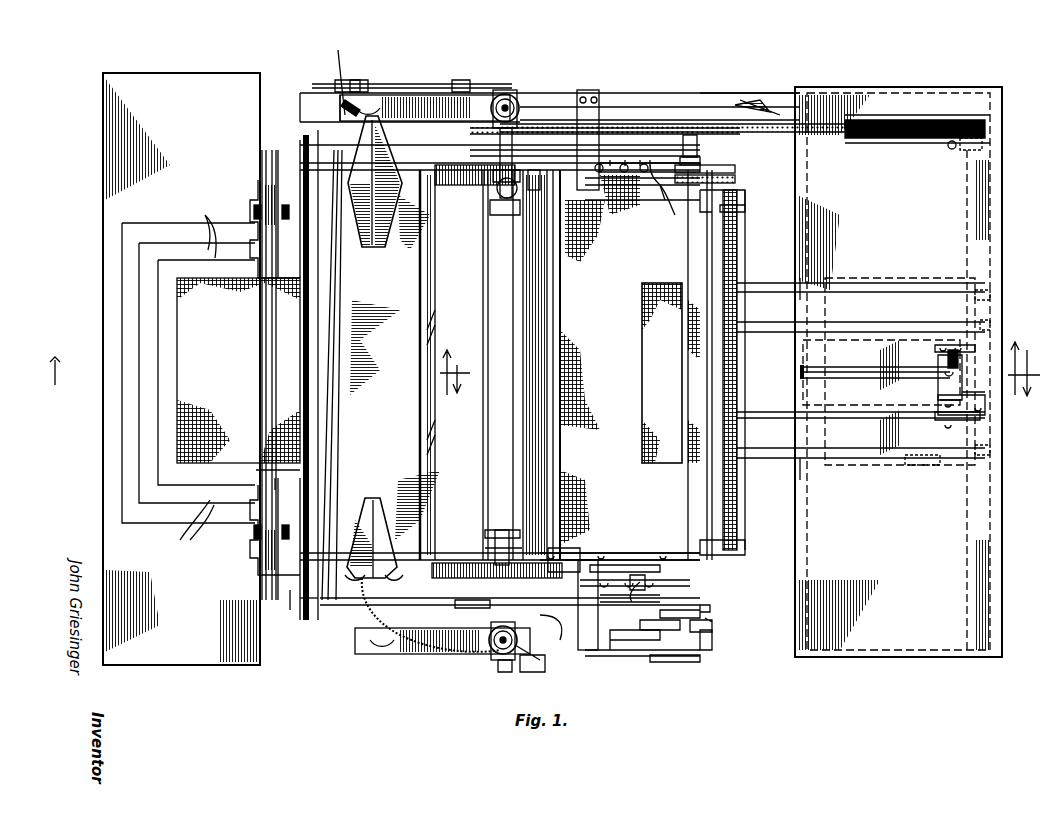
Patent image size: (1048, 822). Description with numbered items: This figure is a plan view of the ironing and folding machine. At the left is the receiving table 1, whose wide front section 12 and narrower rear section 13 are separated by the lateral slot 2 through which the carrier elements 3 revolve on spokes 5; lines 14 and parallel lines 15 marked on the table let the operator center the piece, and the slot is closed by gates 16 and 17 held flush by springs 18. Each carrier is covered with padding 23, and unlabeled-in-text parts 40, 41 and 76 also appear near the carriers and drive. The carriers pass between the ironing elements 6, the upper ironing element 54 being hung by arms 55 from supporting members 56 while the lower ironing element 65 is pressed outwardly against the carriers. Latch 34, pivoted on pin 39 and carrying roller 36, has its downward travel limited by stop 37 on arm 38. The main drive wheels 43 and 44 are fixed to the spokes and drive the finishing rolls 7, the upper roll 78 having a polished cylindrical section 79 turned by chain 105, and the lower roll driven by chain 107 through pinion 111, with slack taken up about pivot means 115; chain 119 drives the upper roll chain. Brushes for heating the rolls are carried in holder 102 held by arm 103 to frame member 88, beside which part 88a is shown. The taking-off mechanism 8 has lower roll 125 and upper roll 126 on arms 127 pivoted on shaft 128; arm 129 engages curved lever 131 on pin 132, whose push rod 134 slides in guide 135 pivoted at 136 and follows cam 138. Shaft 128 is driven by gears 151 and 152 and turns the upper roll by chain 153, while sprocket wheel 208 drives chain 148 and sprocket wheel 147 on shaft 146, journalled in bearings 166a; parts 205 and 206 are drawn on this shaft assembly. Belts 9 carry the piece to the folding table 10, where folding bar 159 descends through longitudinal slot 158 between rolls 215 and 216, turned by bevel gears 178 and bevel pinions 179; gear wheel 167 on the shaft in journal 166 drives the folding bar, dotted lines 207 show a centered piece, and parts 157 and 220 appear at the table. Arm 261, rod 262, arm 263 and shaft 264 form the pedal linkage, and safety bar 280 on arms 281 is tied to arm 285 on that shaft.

The table 1 is at (90, 194).
The lateral slot 2 is at (254, 547).
The carrier elements 3 is at (276, 563).
The spokes 5 is at (290, 156).
The ironing elements 6 is at (315, 401).
The rolls 7 is at (471, 276).
The taking-off mechanism 8 is at (735, 570).
The belts 9 is at (765, 325).
The folding table 10 is at (898, 372).
The front section 12 is at (228, 80).
The rear section 13 is at (289, 210).
The lines 14 is at (160, 430).
The parallel lines 15 is at (218, 215).
The gate 16 is at (256, 477).
The gate 17 is at (1022, 368).
The springs 18 is at (250, 217).
The padding 23 is at (600, 365).
The latch 34 is at (618, 565).
The roller 36 is at (640, 595).
The stop 37 is at (552, 560).
The arm 38 is at (600, 100).
The pin 39 is at (598, 552).
The insulating blocks 40 is at (238, 370).
The pawl bar 41 is at (650, 573).
The main drive wheel 43 is at (462, 578).
The main drive wheel 44 is at (490, 176).
The upper ironing element 54 is at (361, 375).
The arms 55 is at (372, 246).
The supporting members 56 is at (452, 116).
The lower ironing element 65 is at (432, 322).
The latch tip 76 is at (352, 100).
The upper roll 78 is at (501, 263).
The cylindrical section 79 is at (500, 450).
The frame member 88 is at (514, 97).
The roller bearing 88a is at (480, 205).
The holder 102 is at (497, 530).
The arm 103 is at (540, 645).
The chain 105 is at (625, 145).
The chain 107 is at (537, 156).
The pinion 111 is at (508, 216).
The pivot means 115 is at (555, 215).
The chain 119 is at (553, 130).
The lower roll 125 is at (700, 488).
The upper roll 126 is at (725, 480).
The arms 127 is at (730, 214).
The shaft 128 is at (697, 148).
The arm 129 is at (714, 612).
The curved lever 131 is at (698, 605).
The pin 132 is at (660, 638).
The push rod 134 is at (622, 635).
The guide 135 is at (590, 655).
The pivot 136 is at (560, 645).
The cam 138 is at (466, 600).
The shaft 146 is at (975, 238).
The sprocket wheel 147 is at (975, 122).
The chain 148 is at (755, 133).
The gear wheel 151 is at (660, 195).
The gear wheel 152 is at (658, 185).
The chain 153 is at (738, 183).
The terminal 157 is at (803, 286).
The longitudinal slot 158 is at (882, 378).
The folding bar 159 is at (920, 378).
The journal 166 is at (988, 406).
The bearings 166a is at (980, 140).
The gear wheel 167 is at (935, 416).
The bevel gears 178 is at (975, 350).
The bevel pinions 179 is at (945, 355).
The washer 205 is at (705, 168).
The collar 206 is at (738, 172).
The dotted lines 207 is at (882, 278).
The sprocket wheel 208 is at (705, 125).
The roll 215 is at (875, 312).
The roll 216 is at (850, 405).
The terminal 220 is at (992, 298).
The arm 261 is at (478, 92).
The rod 262 is at (415, 82).
The arm 263 is at (340, 70).
The shaft 264 is at (300, 597).
The bar 280 is at (302, 355).
The arms 281 is at (316, 100).
The arm 285 is at (350, 82).